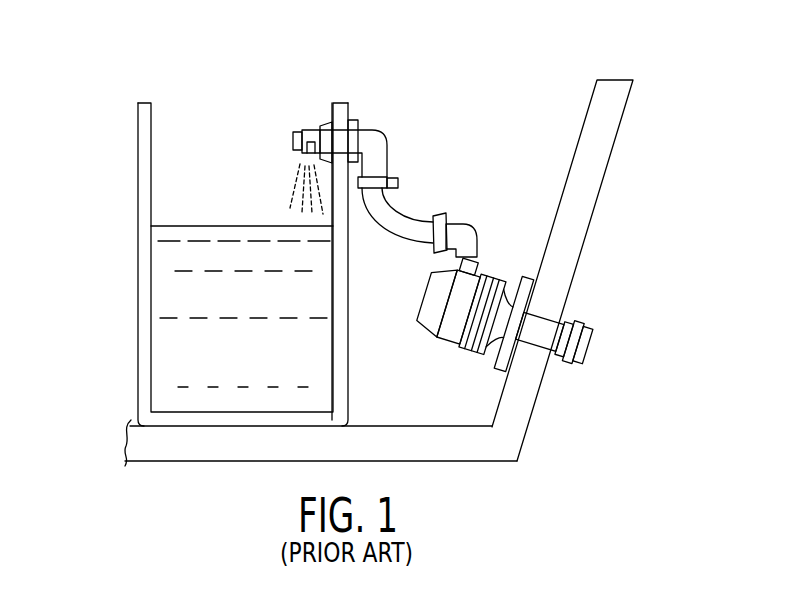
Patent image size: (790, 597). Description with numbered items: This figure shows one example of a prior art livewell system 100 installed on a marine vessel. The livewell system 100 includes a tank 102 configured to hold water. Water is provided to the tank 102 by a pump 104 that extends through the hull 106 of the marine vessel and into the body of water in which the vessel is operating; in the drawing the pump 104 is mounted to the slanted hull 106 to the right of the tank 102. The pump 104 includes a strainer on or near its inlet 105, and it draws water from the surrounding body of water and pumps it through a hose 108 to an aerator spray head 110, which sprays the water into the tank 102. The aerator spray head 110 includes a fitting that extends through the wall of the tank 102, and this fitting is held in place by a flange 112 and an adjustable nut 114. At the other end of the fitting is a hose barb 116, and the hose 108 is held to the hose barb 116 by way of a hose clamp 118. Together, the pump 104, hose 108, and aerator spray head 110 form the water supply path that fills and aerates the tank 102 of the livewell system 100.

The livewell system 100 is at (476, 105).
The tank 102 is at (138, 290).
The pump 104 is at (446, 334).
The inlet 105 is at (594, 350).
The hull 106 is at (566, 229).
The hose 108 is at (411, 222).
The aerator spray head 110 is at (289, 124).
The flange 112 is at (349, 119).
The adjustable nut 114 is at (327, 122).
The hose barb 116 is at (363, 153).
The hose clamp 118 is at (396, 182).